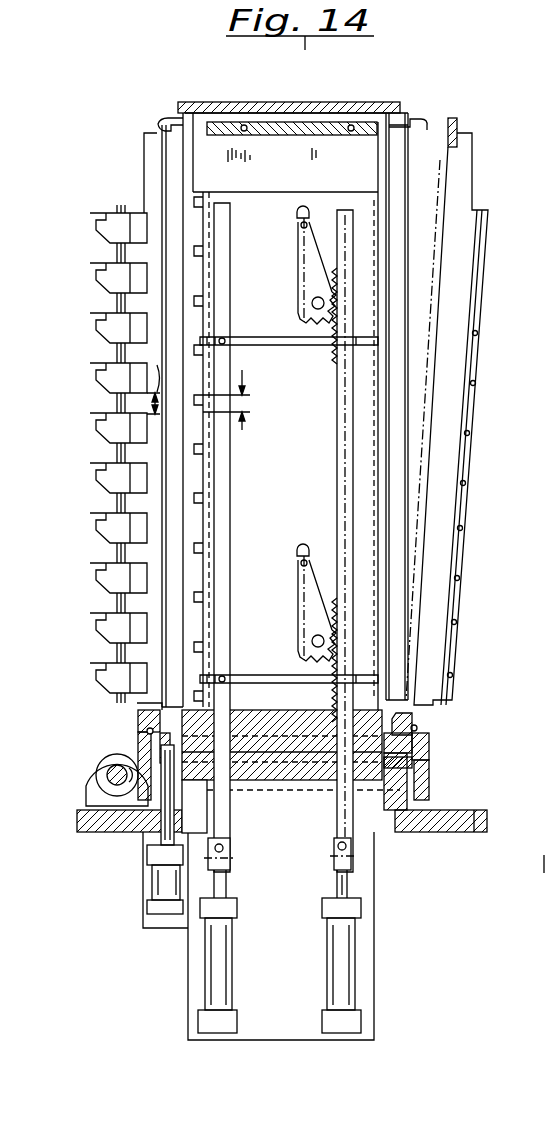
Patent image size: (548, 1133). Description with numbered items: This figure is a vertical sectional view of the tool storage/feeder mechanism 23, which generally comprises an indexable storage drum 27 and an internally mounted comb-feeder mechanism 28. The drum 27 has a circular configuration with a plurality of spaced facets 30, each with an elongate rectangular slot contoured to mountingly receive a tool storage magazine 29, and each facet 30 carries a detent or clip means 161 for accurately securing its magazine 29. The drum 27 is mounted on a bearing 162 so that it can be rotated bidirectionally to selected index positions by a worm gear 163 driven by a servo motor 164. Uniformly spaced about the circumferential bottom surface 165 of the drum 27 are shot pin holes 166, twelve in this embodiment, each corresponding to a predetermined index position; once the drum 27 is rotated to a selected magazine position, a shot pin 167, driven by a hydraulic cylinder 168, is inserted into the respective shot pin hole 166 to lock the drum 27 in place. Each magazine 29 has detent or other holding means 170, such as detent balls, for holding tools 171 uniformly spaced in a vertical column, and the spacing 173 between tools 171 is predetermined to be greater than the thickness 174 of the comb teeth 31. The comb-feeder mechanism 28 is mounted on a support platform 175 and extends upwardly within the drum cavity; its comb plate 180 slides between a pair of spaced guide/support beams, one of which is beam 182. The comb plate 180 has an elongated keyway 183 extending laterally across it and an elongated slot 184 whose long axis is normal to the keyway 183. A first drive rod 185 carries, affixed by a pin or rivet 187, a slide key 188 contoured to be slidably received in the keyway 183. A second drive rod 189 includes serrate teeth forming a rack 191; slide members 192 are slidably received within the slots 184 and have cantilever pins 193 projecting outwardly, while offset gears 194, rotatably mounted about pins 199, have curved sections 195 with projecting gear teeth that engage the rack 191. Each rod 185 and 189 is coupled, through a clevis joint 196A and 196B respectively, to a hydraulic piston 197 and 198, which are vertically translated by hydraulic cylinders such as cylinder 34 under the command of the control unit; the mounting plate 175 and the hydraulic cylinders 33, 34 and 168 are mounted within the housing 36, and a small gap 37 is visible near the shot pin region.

The tool storage/feeder mechanism 23 is at (417, 78).
The storage drum 27 is at (230, 100).
The comb-feeder mechanism 28 is at (312, 157).
The tool storage magazine 29 is at (476, 153).
The facet 30 is at (173, 192).
The comb teeth 31 is at (194, 550).
The hydraulic cylinder 33 is at (346, 965).
The hydraulic cylinder 34 is at (220, 978).
The housing 36 is at (471, 832).
The gap 37 is at (170, 796).
The detent or clip means 161 is at (172, 110).
The bearing 162 is at (416, 757).
The worm gear 163 is at (122, 788).
The servo motor 164 is at (85, 763).
The circumferential bottom surface 165 is at (384, 778).
The shot pin hole 166 is at (147, 740).
The shot pin 167 is at (157, 830).
The hydraulic cylinder 168 is at (160, 878).
The detent or holding means 170 is at (113, 283).
The tool 171 is at (103, 223).
The spacing 173 is at (146, 377).
The thickness 174 is at (241, 400).
The support platform 175 is at (302, 875).
The comb plate 180 is at (273, 217).
The guide/support beam 182 is at (352, 163).
The keyway 183 is at (276, 337).
The slot 184 is at (307, 203).
The first drive rod 185 is at (223, 610).
The pin or rivet 187 is at (222, 338).
The slide key 188 is at (245, 337).
The second drive rod 189 is at (338, 452).
The rack 191 is at (344, 363).
The slide member 192 is at (298, 215).
The cantilever pin 193 is at (302, 232).
The offset gear 194 is at (318, 253).
The curved section 195 is at (339, 313).
The clevis joint 196A is at (230, 860).
The clevis joint 196B is at (337, 860).
The hydraulic piston 197 is at (222, 890).
The hydraulic piston 198 is at (344, 883).
The pin 199 is at (324, 303).